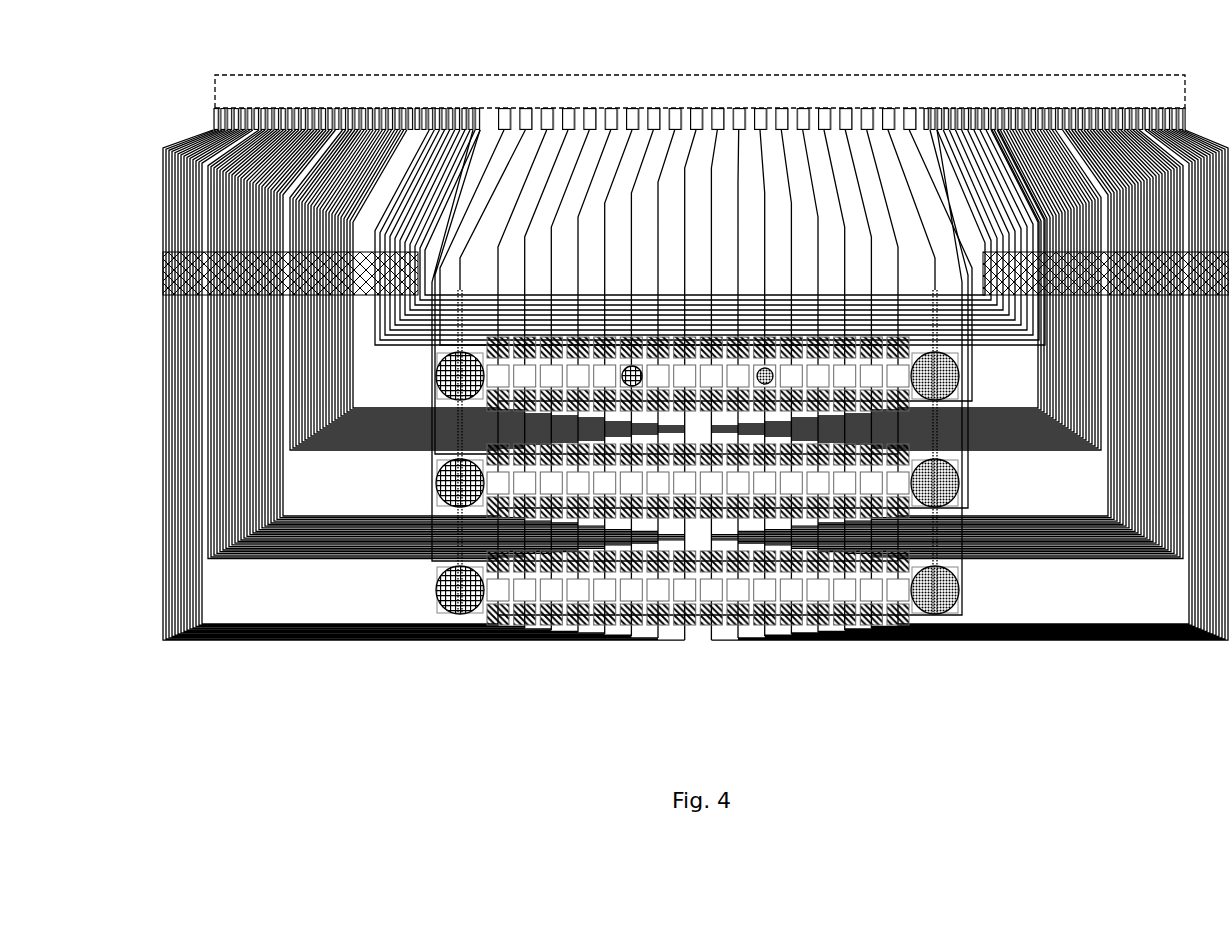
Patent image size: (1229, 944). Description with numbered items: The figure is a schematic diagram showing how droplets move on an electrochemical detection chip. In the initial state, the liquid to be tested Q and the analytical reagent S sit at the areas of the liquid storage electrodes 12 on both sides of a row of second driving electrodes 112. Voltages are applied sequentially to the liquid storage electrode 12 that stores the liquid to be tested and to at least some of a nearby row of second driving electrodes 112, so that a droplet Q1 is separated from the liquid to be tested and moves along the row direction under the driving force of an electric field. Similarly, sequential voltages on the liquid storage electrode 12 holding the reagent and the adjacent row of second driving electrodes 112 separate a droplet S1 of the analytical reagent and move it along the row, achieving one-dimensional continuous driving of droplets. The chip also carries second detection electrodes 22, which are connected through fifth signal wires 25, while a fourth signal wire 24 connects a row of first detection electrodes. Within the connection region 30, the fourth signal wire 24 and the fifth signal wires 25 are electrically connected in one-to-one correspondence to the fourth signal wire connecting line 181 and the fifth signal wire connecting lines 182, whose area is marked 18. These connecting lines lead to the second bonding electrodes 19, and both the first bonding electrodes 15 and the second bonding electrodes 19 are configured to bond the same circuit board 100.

The circuit board 100 is at (778, 96).
The second bonding electrodes 19 is at (448, 107).
The first bonding electrodes 15 is at (688, 122).
The fourth signal wire connecting line 181 is at (168, 146).
The fifth signal wire connecting lines 182 is at (178, 171).
The area of signal wire connecting lines 18 is at (182, 209).
The connection region 30 is at (215, 272).
The fourth signal wire 24 is at (200, 452).
The fifth signal wires 25 is at (181, 504).
The liquid to be tested Q is at (455, 378).
The analytical reagent S is at (950, 369).
The droplet of the liquid to be tested Q1 is at (631, 369).
The droplet of the analytical reagent S1 is at (763, 369).
The liquid storage electrode 12 is at (437, 585).
The second driving electrodes 112 is at (500, 588).
The second detection electrodes 22 is at (525, 614).